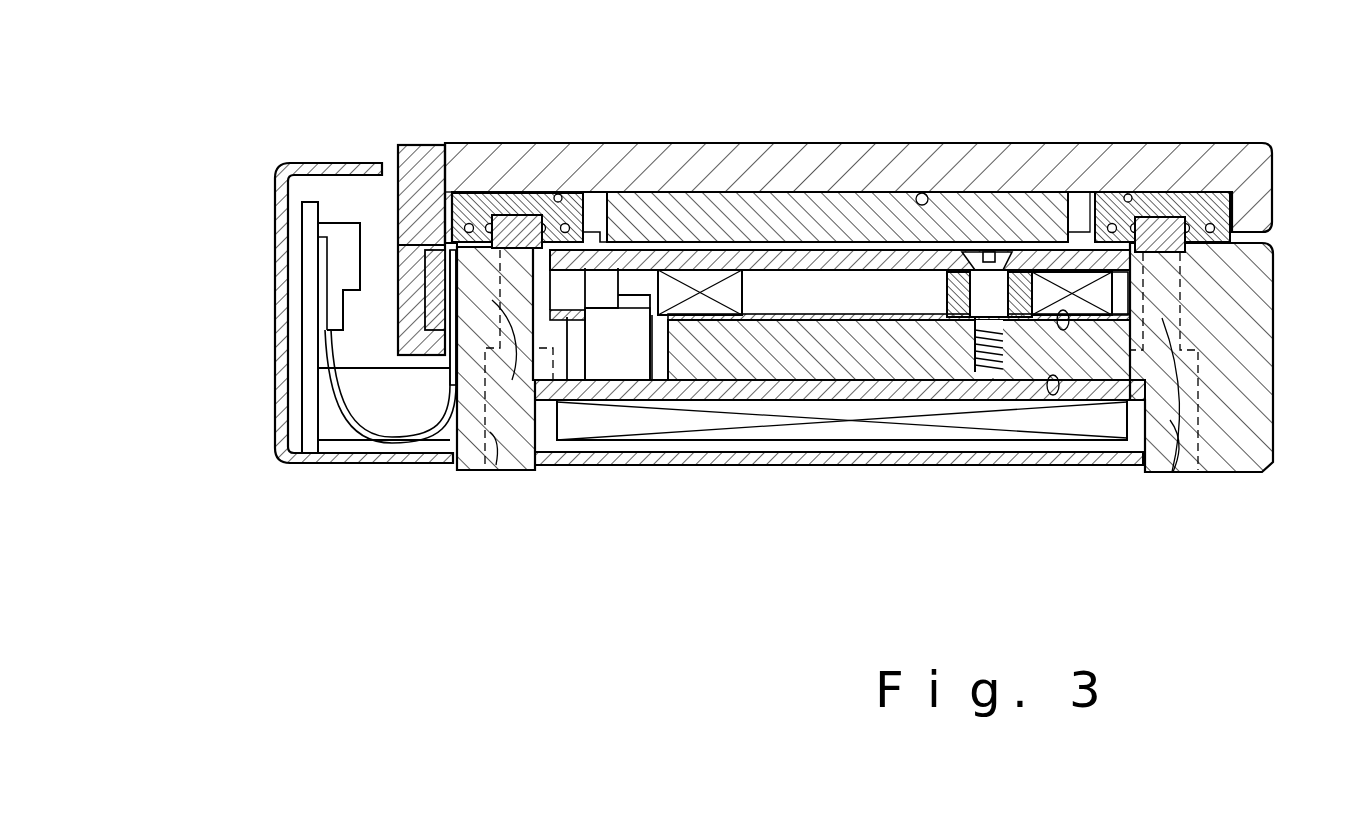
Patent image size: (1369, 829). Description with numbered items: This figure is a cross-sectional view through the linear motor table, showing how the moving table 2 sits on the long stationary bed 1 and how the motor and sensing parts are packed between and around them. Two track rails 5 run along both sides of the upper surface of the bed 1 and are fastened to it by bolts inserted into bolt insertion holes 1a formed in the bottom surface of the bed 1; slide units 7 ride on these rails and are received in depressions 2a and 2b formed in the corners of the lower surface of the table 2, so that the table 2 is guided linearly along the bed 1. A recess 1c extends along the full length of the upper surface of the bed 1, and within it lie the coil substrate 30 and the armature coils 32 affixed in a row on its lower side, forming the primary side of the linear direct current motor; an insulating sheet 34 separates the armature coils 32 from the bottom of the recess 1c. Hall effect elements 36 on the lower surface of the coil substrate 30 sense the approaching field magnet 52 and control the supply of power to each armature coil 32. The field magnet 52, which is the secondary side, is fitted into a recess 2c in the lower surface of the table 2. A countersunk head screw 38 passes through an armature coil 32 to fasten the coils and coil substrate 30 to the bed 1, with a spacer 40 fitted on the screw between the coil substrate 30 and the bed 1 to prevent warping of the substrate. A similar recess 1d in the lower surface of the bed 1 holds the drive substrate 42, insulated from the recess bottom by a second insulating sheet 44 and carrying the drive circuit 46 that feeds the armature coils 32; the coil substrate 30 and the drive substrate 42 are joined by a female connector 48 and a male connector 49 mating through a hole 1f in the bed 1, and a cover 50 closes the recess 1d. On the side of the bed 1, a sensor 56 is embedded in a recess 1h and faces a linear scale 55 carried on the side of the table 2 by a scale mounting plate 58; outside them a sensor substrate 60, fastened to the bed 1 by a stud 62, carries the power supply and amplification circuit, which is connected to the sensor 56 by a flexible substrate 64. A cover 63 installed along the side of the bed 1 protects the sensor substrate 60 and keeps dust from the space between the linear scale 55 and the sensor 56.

The bed 1 is at (1273, 474).
The bolt insertion holes 1a is at (502, 432).
The recess 1c is at (1076, 283).
The recess 1d is at (1040, 396).
The holes 1f is at (570, 392).
The recess 1h is at (445, 422).
The table 2 is at (1282, 178).
The depression 2a is at (541, 212).
The depression 2b is at (1160, 230).
The recess 2c is at (924, 206).
The track rails 5 is at (511, 196).
The slide units 7 is at (470, 183).
The coil substrate 30 is at (638, 280).
The armature coils 32 is at (745, 266).
The insulating sheet 34 is at (784, 314).
The Hall effect elements 36 is at (702, 280).
The countersunk head screws 38 is at (976, 256).
The spacer 40 is at (1019, 283).
The drive substrate 42 is at (708, 372).
The insulating sheet 44 is at (776, 384).
The drive circuit 46 is at (851, 442).
The female connector 48 is at (605, 302).
The male connector 49 is at (638, 362).
The cover 50 is at (923, 460).
The field magnet 52 is at (846, 197).
The linear scale 55 is at (388, 242).
The sensor 56 is at (447, 360).
The scale mounting plate 58 is at (420, 165).
The sensor substrate 60 is at (298, 307).
The stud 62 is at (335, 408).
The cover 63 is at (298, 165).
The flexible substrate 64 is at (350, 412).